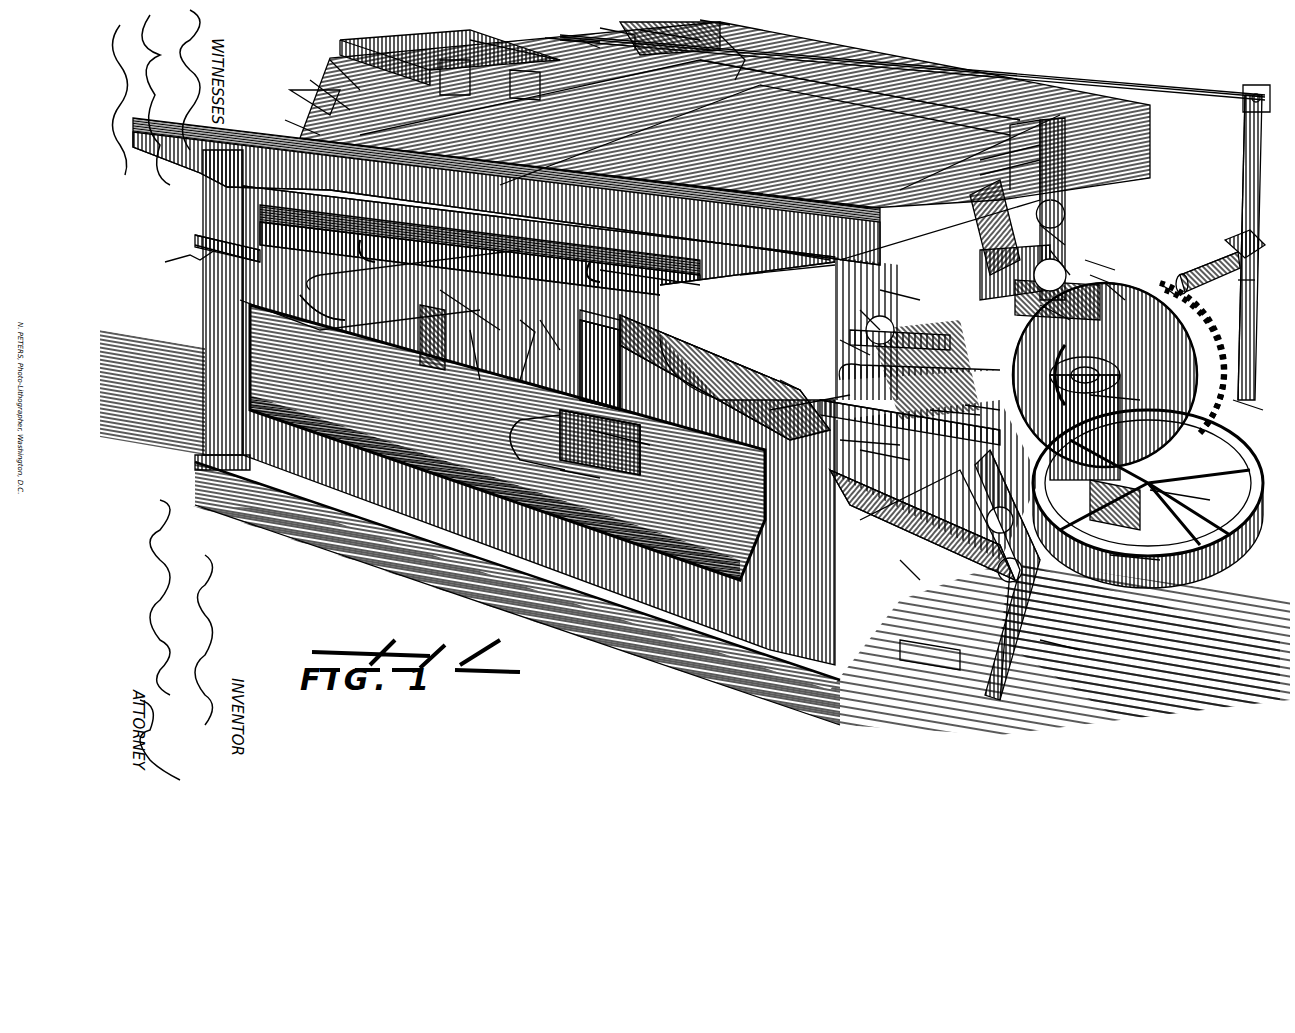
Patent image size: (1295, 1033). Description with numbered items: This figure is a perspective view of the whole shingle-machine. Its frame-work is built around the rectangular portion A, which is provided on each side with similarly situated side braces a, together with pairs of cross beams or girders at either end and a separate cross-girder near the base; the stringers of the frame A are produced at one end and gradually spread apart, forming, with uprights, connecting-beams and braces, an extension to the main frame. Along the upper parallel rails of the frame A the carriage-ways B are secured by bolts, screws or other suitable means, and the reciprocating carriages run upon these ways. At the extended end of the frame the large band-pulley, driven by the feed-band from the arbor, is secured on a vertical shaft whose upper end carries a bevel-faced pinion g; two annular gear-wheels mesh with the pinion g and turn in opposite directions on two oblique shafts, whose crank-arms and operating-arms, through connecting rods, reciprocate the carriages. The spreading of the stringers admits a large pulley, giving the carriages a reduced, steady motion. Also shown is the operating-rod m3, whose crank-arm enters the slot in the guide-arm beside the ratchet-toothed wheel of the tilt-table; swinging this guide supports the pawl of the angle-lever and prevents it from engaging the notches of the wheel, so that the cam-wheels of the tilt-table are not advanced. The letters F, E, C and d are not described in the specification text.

The rectangular frame portion A is at (770, 340).
The carriage-ways B is at (495, 50).
The side braces a is at (1263, 450).
The bevel-faced pinion g is at (1118, 276).
The table frame F is at (790, 115).
The bracket E is at (600, 447).
The post C is at (596, 400).
The base opening d is at (575, 525).
The operating-rod m3 is at (200, 255).